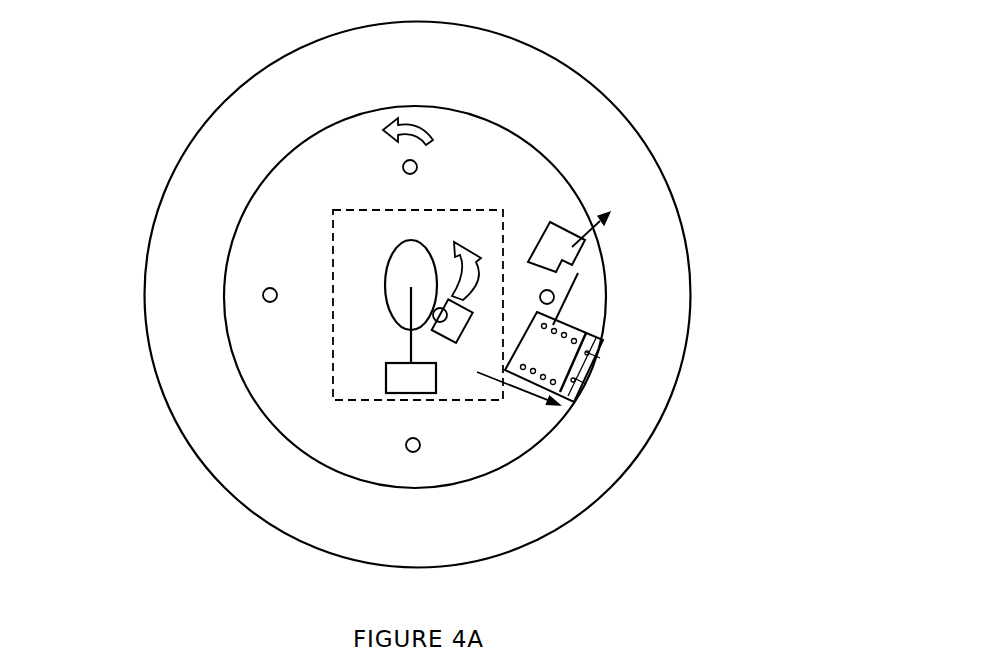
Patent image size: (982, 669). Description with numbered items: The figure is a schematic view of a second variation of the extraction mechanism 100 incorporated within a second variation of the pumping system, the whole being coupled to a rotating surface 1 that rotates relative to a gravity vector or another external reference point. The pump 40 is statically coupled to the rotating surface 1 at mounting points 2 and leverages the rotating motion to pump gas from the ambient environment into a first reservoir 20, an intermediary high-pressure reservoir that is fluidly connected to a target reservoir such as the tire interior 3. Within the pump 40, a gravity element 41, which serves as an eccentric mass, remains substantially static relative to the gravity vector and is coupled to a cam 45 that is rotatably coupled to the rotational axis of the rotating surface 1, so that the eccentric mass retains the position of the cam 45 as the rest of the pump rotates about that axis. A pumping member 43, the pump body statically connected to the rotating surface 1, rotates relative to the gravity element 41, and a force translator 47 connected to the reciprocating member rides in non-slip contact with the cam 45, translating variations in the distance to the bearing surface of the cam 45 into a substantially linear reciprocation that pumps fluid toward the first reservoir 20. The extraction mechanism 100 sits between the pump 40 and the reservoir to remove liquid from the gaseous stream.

The rotating surface 1 is at (172, 120).
The mounting points 2 is at (250, 294).
The tire interior 3 is at (645, 149).
The first reservoir 20 is at (567, 228).
The pump 40 is at (322, 256).
The gravity element 41 is at (375, 392).
The pumping member 43 is at (453, 348).
The cam 45 is at (372, 246).
The force translator 47 is at (449, 288).
The extraction mechanism 100 is at (625, 341).